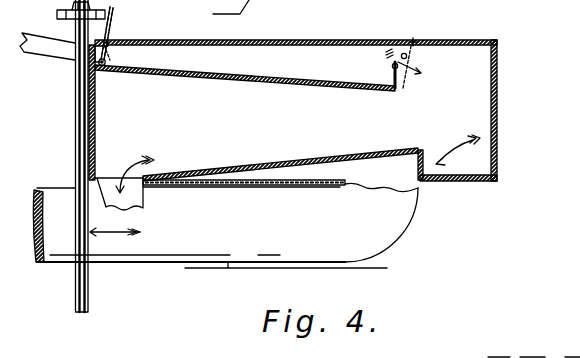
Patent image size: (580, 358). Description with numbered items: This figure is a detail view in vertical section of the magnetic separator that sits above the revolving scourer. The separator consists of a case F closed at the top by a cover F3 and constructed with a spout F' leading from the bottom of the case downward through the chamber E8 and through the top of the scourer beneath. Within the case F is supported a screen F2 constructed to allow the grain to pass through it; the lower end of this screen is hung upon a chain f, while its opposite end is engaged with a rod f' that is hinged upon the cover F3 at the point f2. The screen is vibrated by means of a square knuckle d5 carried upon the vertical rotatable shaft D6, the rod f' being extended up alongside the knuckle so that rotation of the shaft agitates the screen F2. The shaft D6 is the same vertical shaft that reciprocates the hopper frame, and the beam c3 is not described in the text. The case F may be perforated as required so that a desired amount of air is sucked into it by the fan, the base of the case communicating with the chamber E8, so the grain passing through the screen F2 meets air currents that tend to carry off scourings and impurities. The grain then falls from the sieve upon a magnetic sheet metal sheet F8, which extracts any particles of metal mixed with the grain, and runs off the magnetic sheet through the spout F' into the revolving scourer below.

The vertical rotatable shaft D6 is at (75, 123).
The square knuckle d5 is at (70, 11).
The supporting beam c3 is at (52, 50).
The rod f' is at (112, 34).
The hinge f2 is at (108, 43).
The cover F3 is at (302, 30).
The case F is at (303, 110).
The screen F2 is at (245, 72).
The chain f is at (398, 63).
The magnetic sheet metal sheet F8 is at (280, 157).
The spout F' is at (220, 197).
The chamber E8 is at (225, 225).